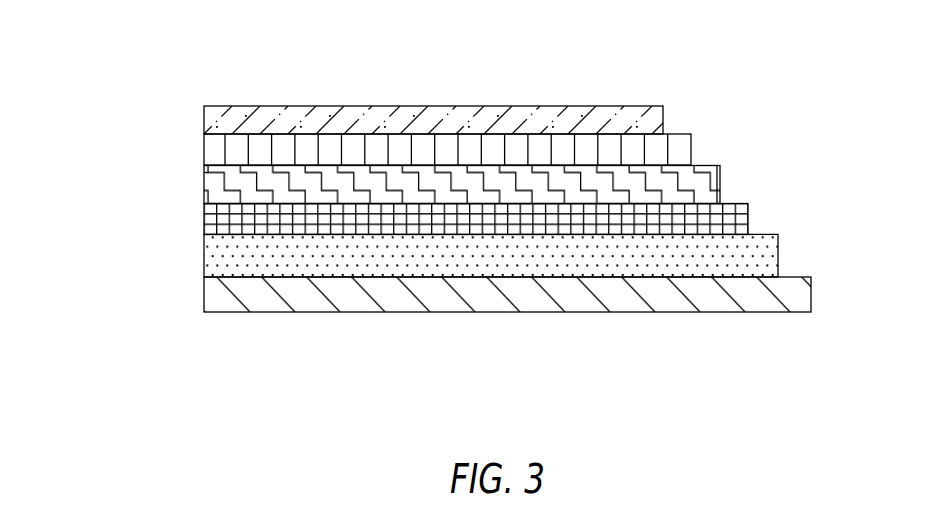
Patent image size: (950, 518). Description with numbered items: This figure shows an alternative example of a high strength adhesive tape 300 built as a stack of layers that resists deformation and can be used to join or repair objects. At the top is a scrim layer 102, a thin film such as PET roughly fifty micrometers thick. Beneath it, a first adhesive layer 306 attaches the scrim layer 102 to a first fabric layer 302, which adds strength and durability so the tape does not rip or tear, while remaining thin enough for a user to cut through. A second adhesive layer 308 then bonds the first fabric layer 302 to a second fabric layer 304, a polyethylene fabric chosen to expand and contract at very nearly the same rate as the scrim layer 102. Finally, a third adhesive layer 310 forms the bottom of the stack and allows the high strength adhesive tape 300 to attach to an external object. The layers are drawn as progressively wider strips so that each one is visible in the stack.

The high strength adhesive tape 300 is at (108, 91).
The scrim layer 102 is at (662, 120).
The first adhesive layer 306 is at (243, 152).
The first fabric layer 302 is at (703, 181).
The second adhesive layer 308 is at (222, 219).
The second fabric layer 304 is at (762, 247).
The third adhesive layer 310 is at (217, 298).